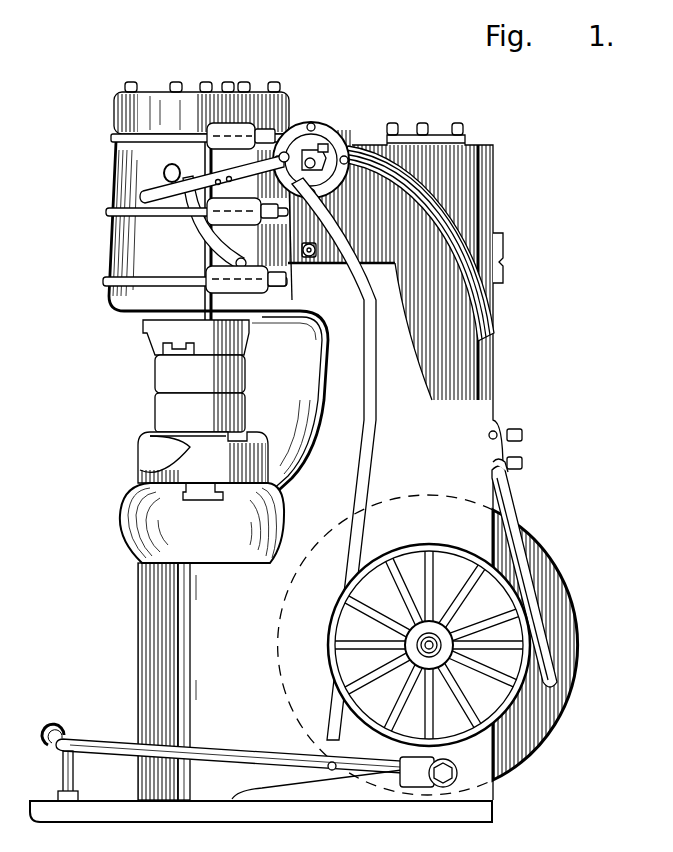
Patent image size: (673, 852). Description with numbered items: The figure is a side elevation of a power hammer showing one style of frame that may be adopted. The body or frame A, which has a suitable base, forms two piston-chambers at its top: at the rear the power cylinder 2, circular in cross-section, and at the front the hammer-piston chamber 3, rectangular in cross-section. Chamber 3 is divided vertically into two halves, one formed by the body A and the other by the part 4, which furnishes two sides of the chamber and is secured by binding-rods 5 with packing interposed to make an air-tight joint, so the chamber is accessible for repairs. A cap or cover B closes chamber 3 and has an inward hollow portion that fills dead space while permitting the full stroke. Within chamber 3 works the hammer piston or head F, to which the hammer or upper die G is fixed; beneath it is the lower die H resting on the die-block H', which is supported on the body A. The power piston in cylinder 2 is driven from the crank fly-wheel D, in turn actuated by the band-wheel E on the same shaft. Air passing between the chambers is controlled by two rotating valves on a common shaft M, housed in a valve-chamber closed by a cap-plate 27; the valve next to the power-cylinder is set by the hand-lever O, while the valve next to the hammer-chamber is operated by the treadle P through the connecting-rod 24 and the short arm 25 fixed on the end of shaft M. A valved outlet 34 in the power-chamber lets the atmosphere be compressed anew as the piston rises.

The power cylinder 2 is at (495, 208).
The hammer-piston chamber 3 is at (114, 239).
The chamber section 4 is at (140, 183).
The binding-rods 5 is at (106, 212).
The connecting-rod 24 is at (376, 432).
The short arm 25 is at (322, 146).
The cap-plate 27 is at (322, 158).
The valved outlet 34 is at (503, 255).
The body or frame A is at (138, 608).
The cap or cover B is at (172, 92).
The crank fly-wheel D is at (579, 617).
The band-wheel E is at (420, 545).
The hammer piston or head F is at (143, 326).
The hammer or upper die G is at (155, 368).
The lower die H is at (184, 412).
The die-block H' is at (187, 455).
The shaft M is at (330, 122).
The hand-lever O is at (172, 173).
The treadle P is at (84, 742).